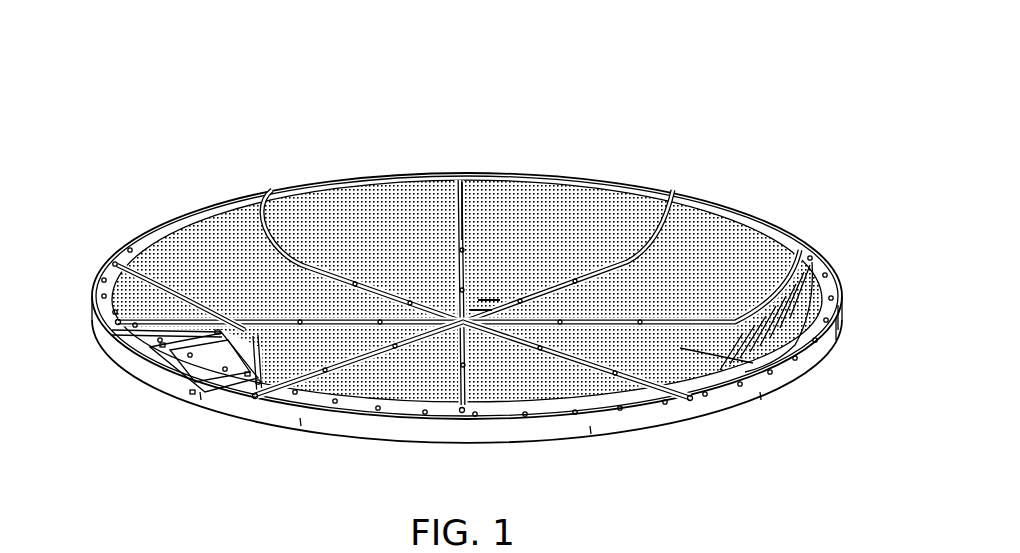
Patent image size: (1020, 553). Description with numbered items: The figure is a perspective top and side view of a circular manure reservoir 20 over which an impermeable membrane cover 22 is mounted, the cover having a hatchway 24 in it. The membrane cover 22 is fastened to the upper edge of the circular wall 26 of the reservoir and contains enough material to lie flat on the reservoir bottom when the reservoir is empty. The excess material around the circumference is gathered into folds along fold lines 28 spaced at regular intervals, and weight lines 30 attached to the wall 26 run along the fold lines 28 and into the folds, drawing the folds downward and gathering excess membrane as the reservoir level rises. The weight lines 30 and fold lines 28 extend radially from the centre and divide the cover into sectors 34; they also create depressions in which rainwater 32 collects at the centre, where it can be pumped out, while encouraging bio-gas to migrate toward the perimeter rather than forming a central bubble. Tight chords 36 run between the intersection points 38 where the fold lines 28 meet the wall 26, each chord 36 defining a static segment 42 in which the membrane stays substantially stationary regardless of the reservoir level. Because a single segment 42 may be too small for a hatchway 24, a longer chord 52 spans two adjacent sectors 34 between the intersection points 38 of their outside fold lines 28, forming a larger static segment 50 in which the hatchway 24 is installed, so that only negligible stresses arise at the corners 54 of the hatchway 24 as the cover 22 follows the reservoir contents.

The circular manure reservoir 20 is at (736, 78).
The membrane cover 22 is at (540, 260).
The hatchway 24 is at (150, 396).
The circular wall 26 is at (596, 429).
The fold lines 28 is at (266, 200).
The weight lines 30 is at (382, 290).
The rainwater 32 is at (480, 303).
The sectors 34 is at (753, 363).
The tight chords 36 is at (800, 312).
The intersection points 38 is at (116, 264).
The static segment 42 is at (822, 343).
The larger static segment 50 is at (327, 393).
The longer chord 52 is at (294, 371).
The corners 54 is at (260, 337).